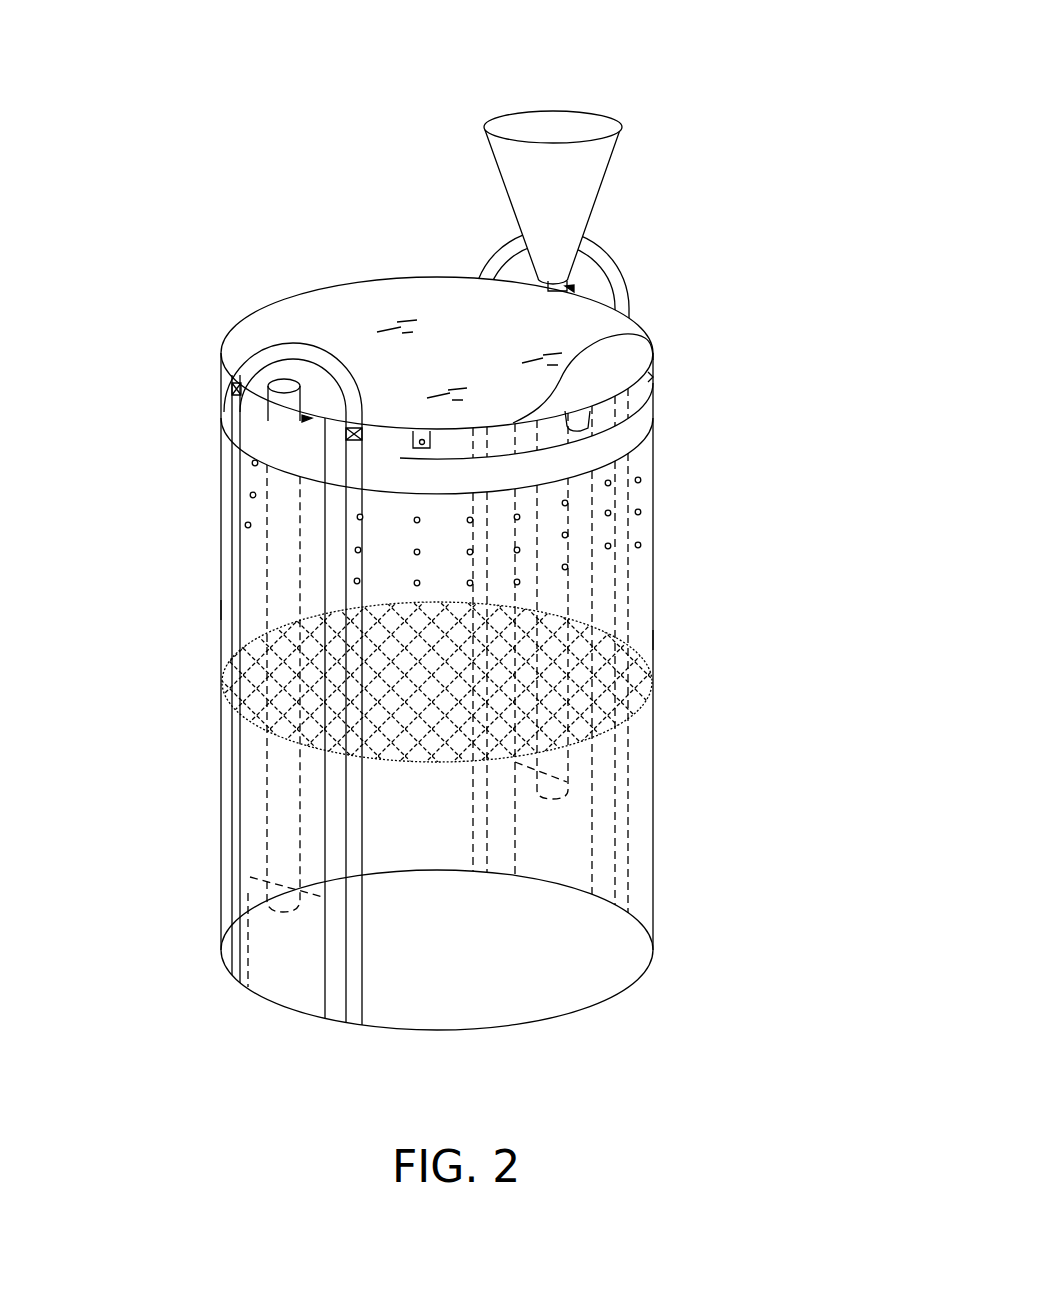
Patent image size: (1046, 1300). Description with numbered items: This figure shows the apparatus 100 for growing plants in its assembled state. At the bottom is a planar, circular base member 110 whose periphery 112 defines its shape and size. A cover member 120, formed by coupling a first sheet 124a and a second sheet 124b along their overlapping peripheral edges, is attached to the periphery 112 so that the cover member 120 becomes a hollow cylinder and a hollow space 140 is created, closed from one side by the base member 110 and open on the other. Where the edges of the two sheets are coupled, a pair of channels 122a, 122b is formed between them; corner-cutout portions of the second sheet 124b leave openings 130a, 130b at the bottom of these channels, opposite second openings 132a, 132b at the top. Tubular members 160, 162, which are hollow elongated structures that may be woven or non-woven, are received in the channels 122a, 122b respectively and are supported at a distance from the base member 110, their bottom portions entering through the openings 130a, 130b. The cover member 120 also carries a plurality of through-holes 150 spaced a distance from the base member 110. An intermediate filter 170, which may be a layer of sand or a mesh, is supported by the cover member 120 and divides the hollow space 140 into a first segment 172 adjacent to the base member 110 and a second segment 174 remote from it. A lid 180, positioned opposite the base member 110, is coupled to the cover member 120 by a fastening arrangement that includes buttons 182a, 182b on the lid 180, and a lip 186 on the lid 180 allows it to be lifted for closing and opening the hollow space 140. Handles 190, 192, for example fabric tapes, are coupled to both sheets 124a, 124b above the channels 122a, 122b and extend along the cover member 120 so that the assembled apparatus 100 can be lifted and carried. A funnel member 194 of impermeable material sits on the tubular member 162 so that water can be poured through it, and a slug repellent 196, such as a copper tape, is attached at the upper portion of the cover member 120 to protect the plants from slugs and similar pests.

The apparatus 100 is at (448, 547).
The base member 110 is at (618, 974).
The periphery 112 is at (397, 1029).
The cover member 120 is at (664, 771).
The channel 122a is at (310, 573).
The channel 122b is at (578, 486).
The first sheet 124a is at (220, 607).
The second sheet 124b is at (653, 640).
The opening 130a is at (250, 878).
The opening 130b is at (578, 785).
The second opening 132a is at (302, 418).
The second opening 132b is at (572, 289).
The hollow space 140 is at (387, 523).
The through-holes 150 is at (642, 513).
The tubular member 160 is at (280, 411).
The tubular member 162 is at (598, 256).
The intermediate filter 170 is at (633, 697).
The first segment 172 is at (640, 895).
The second segment 174 is at (640, 603).
The lid 180 is at (317, 306).
The button 182a is at (652, 378).
The button 182b is at (646, 332).
The lip 186 is at (636, 412).
The handle 190 is at (247, 370).
The handle 192 is at (493, 254).
The funnel member 194 is at (583, 208).
The slug repellent 196 is at (293, 458).